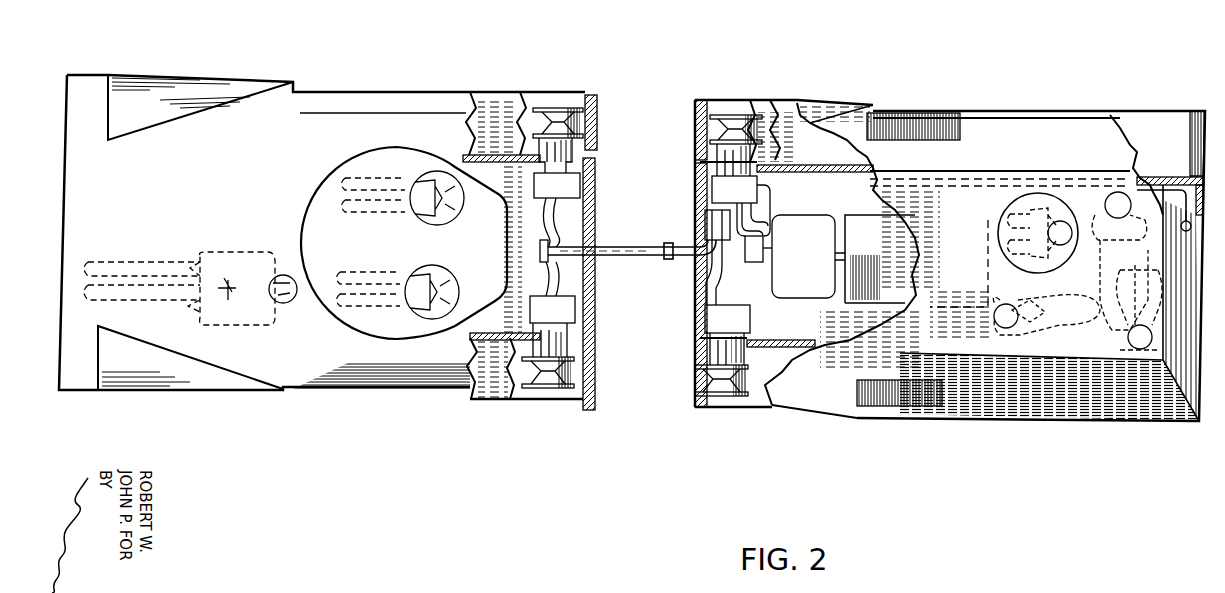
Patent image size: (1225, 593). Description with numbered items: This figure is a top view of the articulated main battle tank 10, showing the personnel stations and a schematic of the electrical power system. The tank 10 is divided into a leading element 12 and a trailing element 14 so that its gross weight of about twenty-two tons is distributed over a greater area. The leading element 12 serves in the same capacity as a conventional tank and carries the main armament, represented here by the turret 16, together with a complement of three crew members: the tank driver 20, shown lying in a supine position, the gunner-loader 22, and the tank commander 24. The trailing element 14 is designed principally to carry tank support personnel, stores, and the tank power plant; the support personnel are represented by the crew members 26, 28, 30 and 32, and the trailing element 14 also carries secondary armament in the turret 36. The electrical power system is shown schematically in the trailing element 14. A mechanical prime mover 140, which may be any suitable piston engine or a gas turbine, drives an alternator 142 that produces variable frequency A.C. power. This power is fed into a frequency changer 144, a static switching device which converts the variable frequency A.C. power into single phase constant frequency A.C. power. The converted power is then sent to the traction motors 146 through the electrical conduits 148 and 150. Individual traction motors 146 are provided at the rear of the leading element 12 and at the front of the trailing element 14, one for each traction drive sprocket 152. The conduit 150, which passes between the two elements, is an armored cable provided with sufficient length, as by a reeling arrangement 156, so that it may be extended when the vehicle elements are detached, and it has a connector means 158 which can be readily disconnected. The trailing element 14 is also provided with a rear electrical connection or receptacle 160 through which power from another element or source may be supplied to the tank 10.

The main battle tank 10 is at (425, 47).
The leading element 12 is at (143, 201).
The trailing element 14 is at (804, 329).
The turret 16 is at (316, 190).
The tank driver 20 is at (210, 250).
The gunner-loader 22 is at (355, 212).
The tank commander 24 is at (384, 272).
The crew member 26 is at (1028, 200).
The crew member 28 is at (1000, 312).
The crew member 30 is at (1102, 194).
The crew member 32 is at (1156, 307).
The turret 36 is at (1050, 198).
The mechanical prime mover 140 is at (898, 246).
The alternator 142 is at (819, 276).
The frequency changer 144 is at (772, 250).
The traction motors 146 is at (573, 196).
The electrical conduit 148 is at (762, 212).
The electrical conduit 150 is at (618, 246).
The traction drive sprocket 152 is at (557, 104).
The reeling arrangement 156 is at (704, 214).
The connector means 158 is at (668, 260).
The rear electrical connection 160 is at (1186, 234).